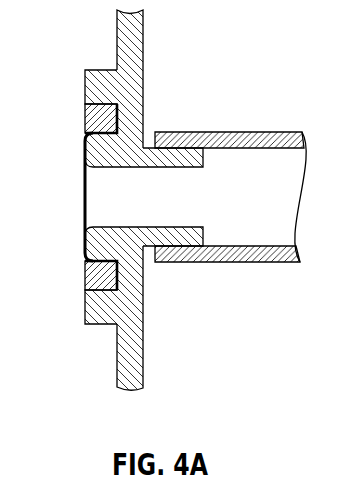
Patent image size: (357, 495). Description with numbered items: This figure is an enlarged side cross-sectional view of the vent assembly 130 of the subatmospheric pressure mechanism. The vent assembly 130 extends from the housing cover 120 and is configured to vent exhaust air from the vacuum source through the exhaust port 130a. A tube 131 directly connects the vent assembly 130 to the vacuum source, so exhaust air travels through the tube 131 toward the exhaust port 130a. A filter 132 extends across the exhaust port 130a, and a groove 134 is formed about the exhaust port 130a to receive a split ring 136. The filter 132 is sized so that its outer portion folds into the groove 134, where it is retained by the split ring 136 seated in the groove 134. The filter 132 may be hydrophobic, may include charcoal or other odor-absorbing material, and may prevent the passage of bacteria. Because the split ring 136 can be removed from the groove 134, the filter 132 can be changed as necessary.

The housing cover 120 is at (143, 40).
The vent assembly 130 is at (247, 84).
The exhaust port 130a is at (186, 197).
The tube 131 is at (215, 262).
The filter 132 is at (85, 197).
The groove 134 is at (100, 103).
The split ring 136 is at (99, 291).